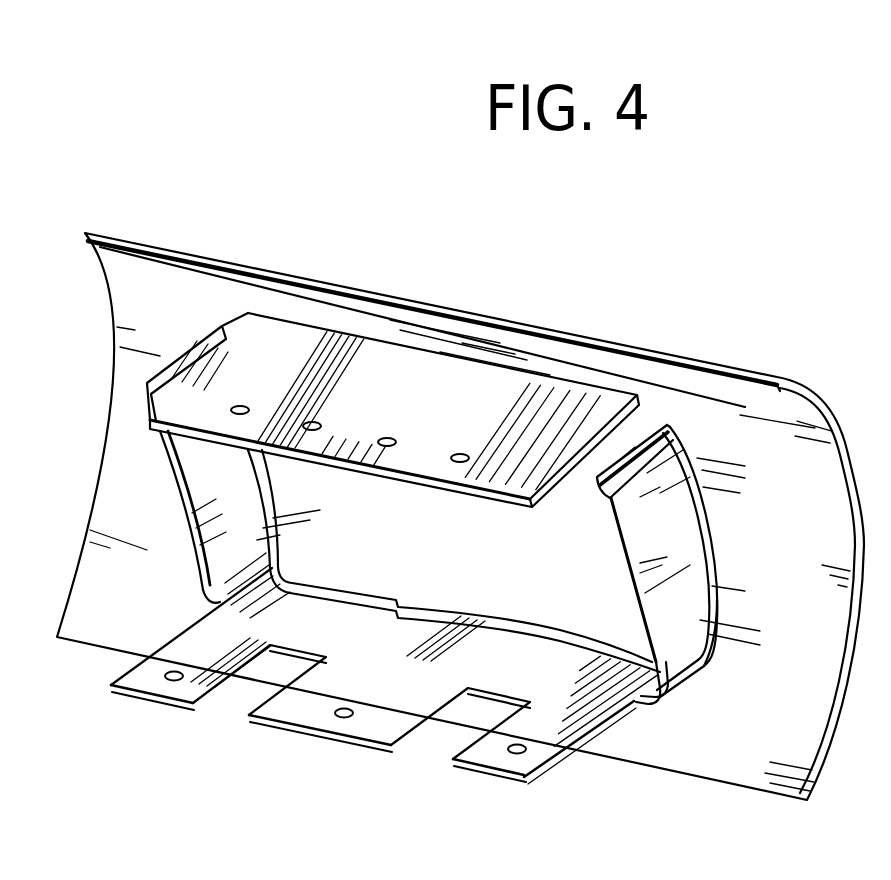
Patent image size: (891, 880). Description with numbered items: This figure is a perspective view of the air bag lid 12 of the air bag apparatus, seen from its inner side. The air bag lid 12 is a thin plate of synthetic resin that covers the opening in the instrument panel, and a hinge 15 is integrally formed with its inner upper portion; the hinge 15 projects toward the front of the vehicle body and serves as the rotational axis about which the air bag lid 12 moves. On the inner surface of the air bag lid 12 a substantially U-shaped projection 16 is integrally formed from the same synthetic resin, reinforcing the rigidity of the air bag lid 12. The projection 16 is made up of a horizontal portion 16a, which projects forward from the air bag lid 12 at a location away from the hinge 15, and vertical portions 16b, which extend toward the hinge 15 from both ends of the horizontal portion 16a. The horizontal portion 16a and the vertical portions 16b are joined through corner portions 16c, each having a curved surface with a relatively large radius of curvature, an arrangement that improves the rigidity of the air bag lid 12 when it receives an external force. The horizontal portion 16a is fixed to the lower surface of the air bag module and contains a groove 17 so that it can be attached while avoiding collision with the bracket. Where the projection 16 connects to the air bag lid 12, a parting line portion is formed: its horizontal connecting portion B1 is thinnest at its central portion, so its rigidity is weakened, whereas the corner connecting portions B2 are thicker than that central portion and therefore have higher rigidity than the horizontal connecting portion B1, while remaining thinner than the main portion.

The air bag lid 12 is at (752, 366).
The hinge 15 is at (424, 378).
The projection 16 is at (410, 641).
The horizontal portion 16a is at (387, 698).
The vertical portions 16b is at (178, 498).
The corner portions 16c is at (207, 600).
The groove 17 is at (238, 697).
The horizontal connecting portion B1 is at (504, 624).
The corner connecting portions B2 is at (714, 645).